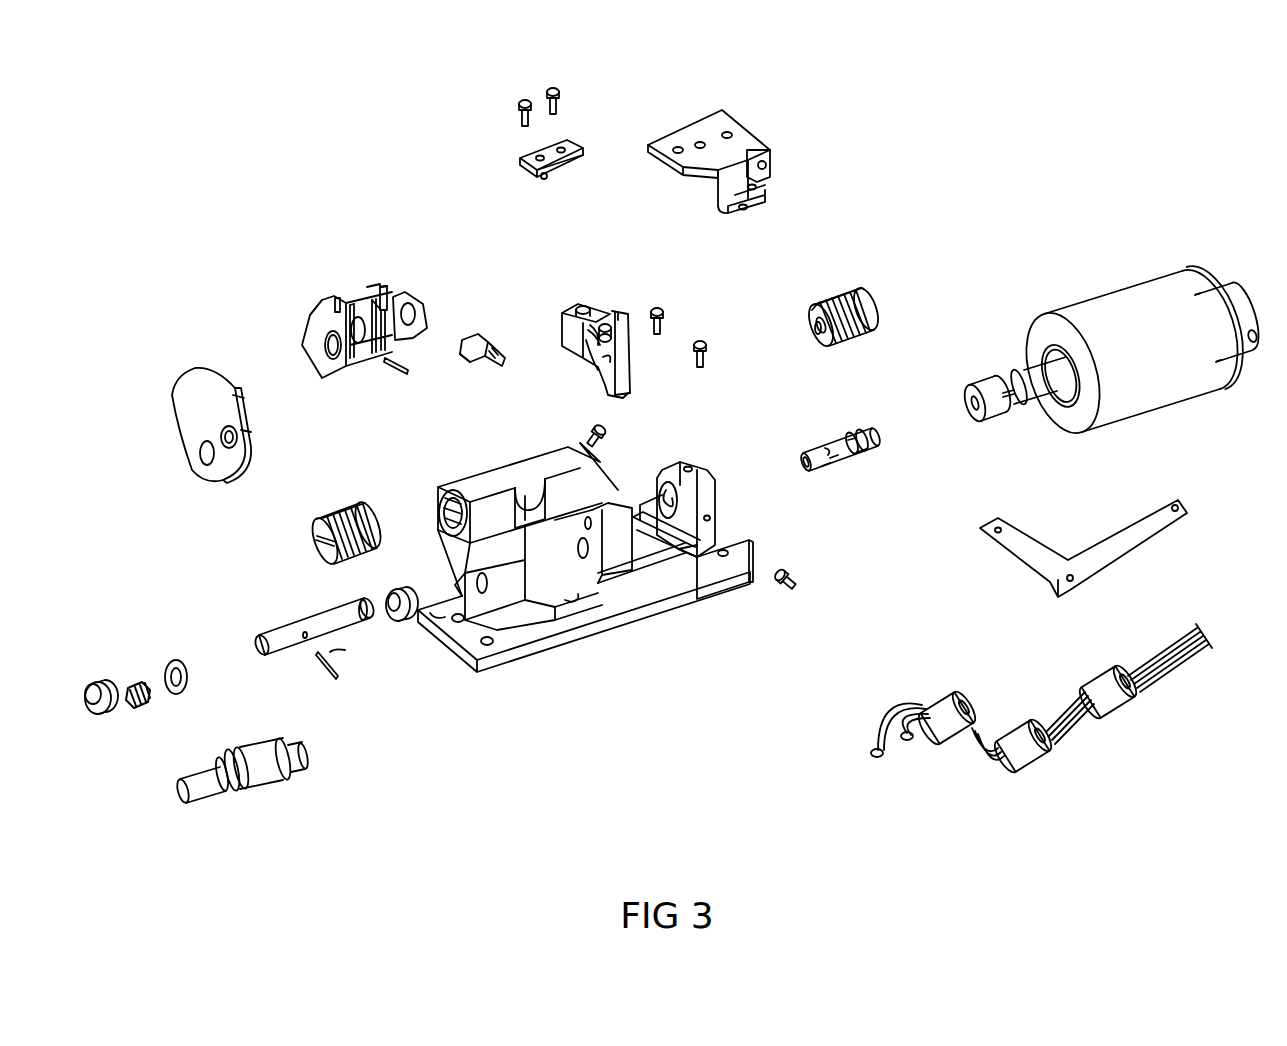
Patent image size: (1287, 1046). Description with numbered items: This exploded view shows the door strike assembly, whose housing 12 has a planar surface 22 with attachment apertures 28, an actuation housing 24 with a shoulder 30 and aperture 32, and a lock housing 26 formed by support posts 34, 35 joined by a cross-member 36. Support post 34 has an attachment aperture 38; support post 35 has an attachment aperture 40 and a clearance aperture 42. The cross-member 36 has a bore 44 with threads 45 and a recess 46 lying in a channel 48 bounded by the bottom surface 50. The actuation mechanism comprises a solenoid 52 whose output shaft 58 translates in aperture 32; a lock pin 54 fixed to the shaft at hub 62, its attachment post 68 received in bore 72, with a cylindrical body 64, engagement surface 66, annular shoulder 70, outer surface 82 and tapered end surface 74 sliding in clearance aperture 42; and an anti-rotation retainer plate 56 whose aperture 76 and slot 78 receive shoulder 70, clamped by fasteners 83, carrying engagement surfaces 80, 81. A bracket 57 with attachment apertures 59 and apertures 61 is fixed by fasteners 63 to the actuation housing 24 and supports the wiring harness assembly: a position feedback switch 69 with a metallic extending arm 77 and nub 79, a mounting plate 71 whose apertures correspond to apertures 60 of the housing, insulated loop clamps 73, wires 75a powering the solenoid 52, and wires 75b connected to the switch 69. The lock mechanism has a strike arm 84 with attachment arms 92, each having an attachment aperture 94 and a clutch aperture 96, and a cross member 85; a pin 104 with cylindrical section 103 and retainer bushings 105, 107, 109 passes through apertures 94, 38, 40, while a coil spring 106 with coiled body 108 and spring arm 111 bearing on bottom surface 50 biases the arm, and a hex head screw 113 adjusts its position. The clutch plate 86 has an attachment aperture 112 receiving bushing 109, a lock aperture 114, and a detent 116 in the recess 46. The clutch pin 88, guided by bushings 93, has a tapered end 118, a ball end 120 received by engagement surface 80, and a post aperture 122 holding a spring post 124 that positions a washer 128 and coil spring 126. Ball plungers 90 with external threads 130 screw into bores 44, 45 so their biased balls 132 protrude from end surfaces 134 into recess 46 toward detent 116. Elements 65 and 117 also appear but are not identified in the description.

The housing 12 is at (556, 636).
The planar surface 22 is at (435, 618).
The actuation housing 24 is at (747, 588).
The lock housing 26 is at (470, 470).
The attachment apertures 28 is at (458, 625).
The shoulder 30 is at (678, 527).
The aperture 32 is at (662, 480).
The support post 34 is at (512, 578).
The support post 35 is at (660, 540).
The cross-member 36 is at (540, 460).
The attachment aperture 38 is at (490, 590).
The attachment aperture 40 is at (605, 520).
The clearance aperture 42 is at (625, 530).
The bore 44 is at (525, 505).
The threads 45 is at (445, 498).
The recess 46 is at (515, 510).
The channel 48 is at (552, 578).
The bottom surface 50 is at (575, 600).
The solenoid 52 is at (1112, 290).
The lock pin 54 is at (862, 430).
The anti-rotation retainer plate 56 is at (603, 300).
The bracket 57 is at (745, 122).
The output shaft 58 is at (1004, 370).
The attachment apertures 59 is at (762, 210).
The apertures 60 is at (730, 560).
The apertures 61 is at (727, 135).
The hub 62 is at (992, 410).
The fasteners 63 is at (518, 118).
The cylindrical body 64 is at (827, 462).
The plate 65 is at (623, 325).
The engagement surface 66 is at (830, 440).
The attachment post 68 is at (872, 445).
The electrical position feedback switch 69 is at (592, 138).
The annular shoulder 70 is at (865, 460).
The mounting plate 71 is at (1105, 530).
The bore 72 is at (975, 398).
The insulated loop clamps 73 is at (1118, 700).
The tapered end surface 74 is at (800, 462).
The wires 75a is at (1163, 660).
The wires 75b is at (900, 702).
The aperture 76 is at (573, 345).
The metallic extending arm 77 is at (570, 165).
The slot 78 is at (557, 313).
The nub 79 is at (544, 178).
The engagement surface 80 is at (630, 396).
The engagement surface 81 is at (633, 312).
The outer surface 82 is at (850, 435).
The fasteners 83 is at (583, 306).
The strike arm 84 is at (318, 292).
The cross member 85 is at (330, 305).
The clutch plate 86 is at (165, 375).
The clutch pin 88 is at (325, 615).
The ball plungers 90 is at (868, 295).
The attachment arms 92 is at (380, 288).
The bushings 93 is at (95, 682).
The attachment aperture 94 is at (338, 350).
The clutch aperture 96 is at (415, 315).
The cylindrical section 103 is at (258, 786).
The pin 104 is at (200, 800).
The first retainer bushing 105 is at (290, 778).
The coil spring 106 is at (352, 305).
The second retainer bushing 107 is at (225, 768).
The coiled body 108 is at (385, 325).
The third retainer bushing 109 is at (205, 762).
The spring arm 111 is at (395, 370).
The attachment aperture 112 is at (205, 465).
The hex head screw 113 is at (473, 328).
The lock aperture 114 is at (240, 445).
The detent 116 is at (200, 385).
The thread 117 is at (463, 348).
The tapered end 118 is at (257, 645).
The ball end 120 is at (440, 518).
The post aperture 122 is at (300, 635).
The spring post 124 is at (315, 660).
The coil spring 126 is at (135, 676).
The washer 128 is at (172, 662).
The external threads 130 is at (835, 298).
The ball 132 is at (800, 325).
The end surface 134 is at (815, 305).